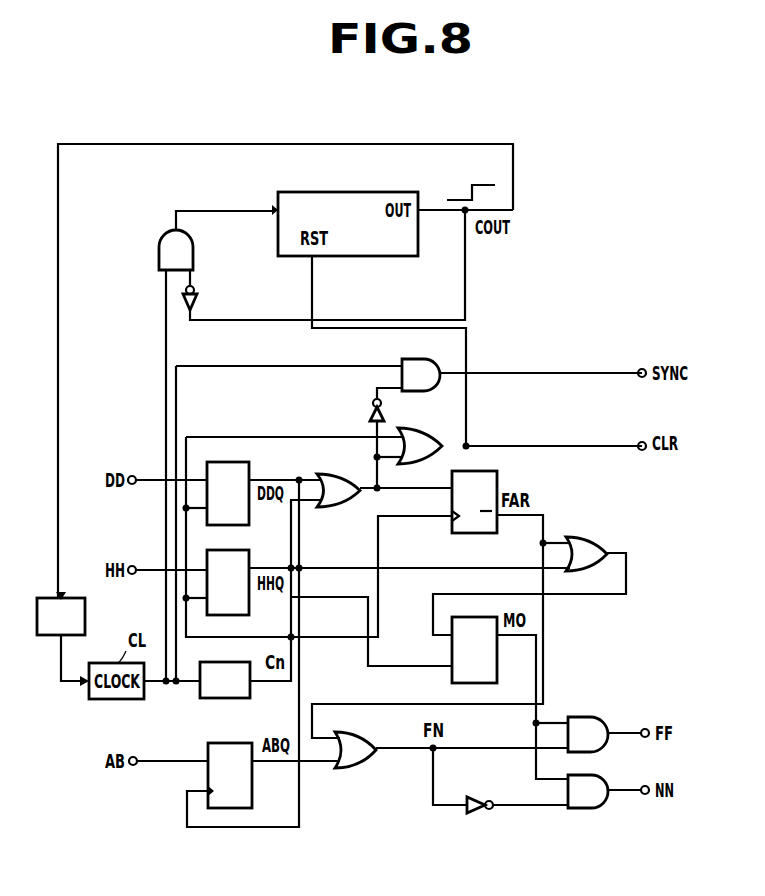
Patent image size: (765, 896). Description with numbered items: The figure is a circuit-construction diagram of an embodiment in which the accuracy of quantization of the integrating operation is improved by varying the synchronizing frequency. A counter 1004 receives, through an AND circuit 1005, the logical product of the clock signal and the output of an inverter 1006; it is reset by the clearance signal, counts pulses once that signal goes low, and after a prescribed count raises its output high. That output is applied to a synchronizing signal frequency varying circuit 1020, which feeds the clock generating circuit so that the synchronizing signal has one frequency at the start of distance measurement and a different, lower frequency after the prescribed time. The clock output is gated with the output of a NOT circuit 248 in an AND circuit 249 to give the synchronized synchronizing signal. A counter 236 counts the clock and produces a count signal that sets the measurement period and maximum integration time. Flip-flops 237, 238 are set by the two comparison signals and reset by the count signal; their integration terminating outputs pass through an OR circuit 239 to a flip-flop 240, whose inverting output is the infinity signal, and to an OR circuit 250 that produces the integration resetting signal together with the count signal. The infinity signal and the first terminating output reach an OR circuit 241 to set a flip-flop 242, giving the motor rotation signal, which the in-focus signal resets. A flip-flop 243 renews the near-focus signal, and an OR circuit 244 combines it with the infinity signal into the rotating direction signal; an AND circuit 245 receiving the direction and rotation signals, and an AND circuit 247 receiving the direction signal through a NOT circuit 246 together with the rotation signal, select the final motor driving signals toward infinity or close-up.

The counter 1004 is at (360, 192).
The AND circuit 1005 is at (158, 253).
The inverter 1006 is at (197, 300).
The synchronizing signal frequency varying circuit 1020 is at (85, 613).
The counter 236 is at (218, 698).
The flip-flop 237 is at (235, 461).
The flip-flop 238 is at (230, 549).
The OR circuit 239 is at (345, 473).
The flip-flop 240 is at (480, 470).
The OR circuit 241 is at (582, 535).
The flip-flop 242 is at (485, 683).
The flip-flop 243 is at (228, 743).
The OR circuit 244 is at (352, 769).
The AND circuit 245 is at (585, 716).
The NOT circuit 246 is at (478, 797).
The AND circuit 247 is at (578, 809).
The NOT circuit 248 is at (370, 416).
The AND circuit 249 is at (404, 357).
The OR circuit 250 is at (445, 420).